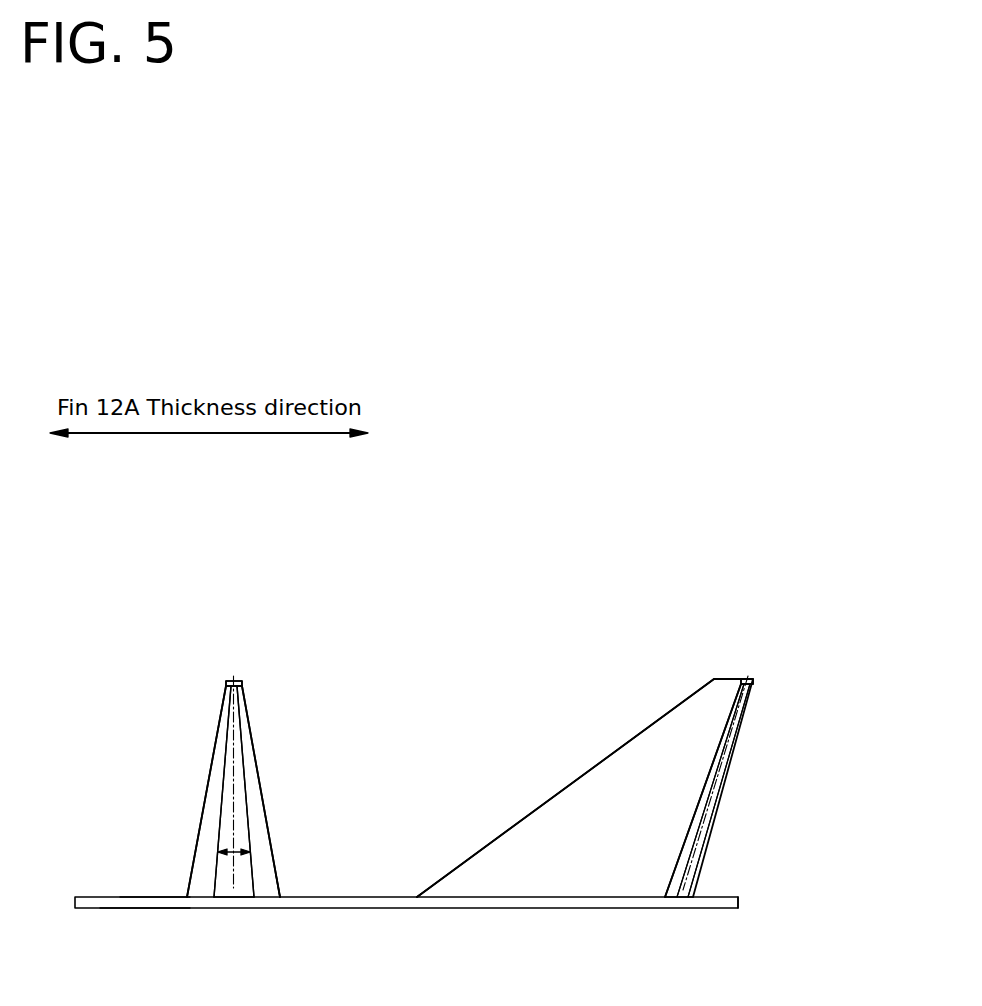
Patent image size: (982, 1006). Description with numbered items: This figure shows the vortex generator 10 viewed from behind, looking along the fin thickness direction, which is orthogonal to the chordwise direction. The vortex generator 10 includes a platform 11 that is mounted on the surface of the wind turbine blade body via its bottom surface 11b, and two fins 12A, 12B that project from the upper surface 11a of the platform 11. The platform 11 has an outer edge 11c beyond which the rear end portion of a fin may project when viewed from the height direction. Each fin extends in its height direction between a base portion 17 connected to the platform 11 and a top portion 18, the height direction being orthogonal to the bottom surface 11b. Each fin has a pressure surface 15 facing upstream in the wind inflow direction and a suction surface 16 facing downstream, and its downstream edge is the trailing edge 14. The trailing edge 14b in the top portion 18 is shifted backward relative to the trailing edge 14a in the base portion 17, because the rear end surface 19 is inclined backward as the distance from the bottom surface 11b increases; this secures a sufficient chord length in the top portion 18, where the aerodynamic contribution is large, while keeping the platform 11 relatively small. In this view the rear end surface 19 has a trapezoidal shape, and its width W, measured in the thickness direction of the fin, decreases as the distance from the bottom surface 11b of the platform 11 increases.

The vortex generator 10 is at (842, 489).
The platform 11 is at (88, 901).
The upper surface 11a is at (150, 897).
The bottom surface 11b is at (128, 908).
The outer edge 11c is at (740, 902).
The fin 12A is at (213, 782).
The fin 12B is at (630, 763).
The trailing edge 14 is at (235, 793).
The trailing edge in the base portion 14a is at (233, 897).
The trailing edge in the top portion 14b is at (236, 680).
The pressure surface 15 is at (210, 820).
The suction surface 16 is at (257, 820).
The base portion 17 is at (282, 895).
The top portion 18 is at (230, 680).
The rear end surface 19 is at (240, 773).
The width of the rear end surface W is at (237, 856).